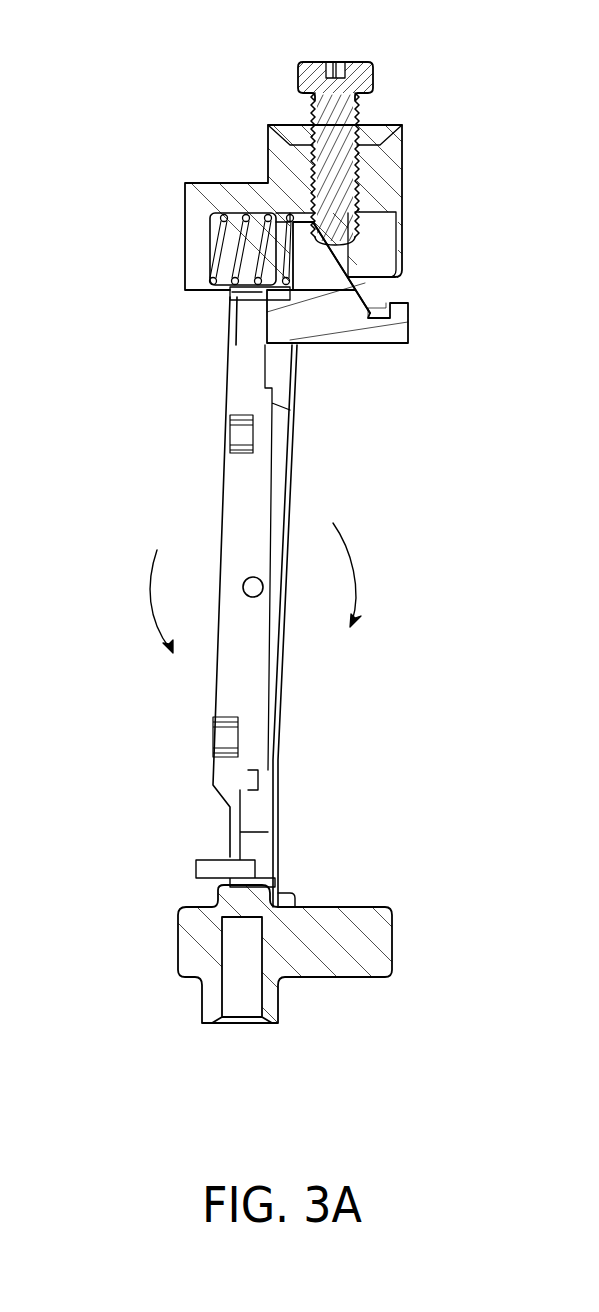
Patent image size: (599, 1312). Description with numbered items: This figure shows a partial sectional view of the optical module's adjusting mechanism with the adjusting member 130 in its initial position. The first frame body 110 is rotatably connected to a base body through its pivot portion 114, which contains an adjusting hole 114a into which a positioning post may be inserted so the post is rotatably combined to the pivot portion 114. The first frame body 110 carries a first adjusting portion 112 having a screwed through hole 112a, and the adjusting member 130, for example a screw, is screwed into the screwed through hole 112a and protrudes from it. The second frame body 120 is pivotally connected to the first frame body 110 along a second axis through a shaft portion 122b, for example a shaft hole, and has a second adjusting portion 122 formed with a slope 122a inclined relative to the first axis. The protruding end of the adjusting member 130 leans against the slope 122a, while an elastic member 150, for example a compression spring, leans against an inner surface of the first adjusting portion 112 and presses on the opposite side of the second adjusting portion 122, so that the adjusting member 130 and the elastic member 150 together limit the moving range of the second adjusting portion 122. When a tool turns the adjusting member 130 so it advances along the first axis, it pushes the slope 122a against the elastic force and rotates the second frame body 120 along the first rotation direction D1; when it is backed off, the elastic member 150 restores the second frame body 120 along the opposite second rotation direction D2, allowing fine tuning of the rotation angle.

The adjusting member 130 is at (313, 77).
The first adjusting portion 112 is at (386, 188).
The screwed through hole 112a is at (355, 167).
The elastic member 150 is at (212, 250).
The second adjusting portion 122 is at (323, 283).
The slope 122a is at (340, 263).
The shaft portion 122b is at (253, 577).
The second frame body 120 is at (252, 847).
The first frame body 110 is at (272, 893).
The pivot portion 114 is at (352, 947).
The adjusting hole 114a is at (222, 957).
The first rotation direction D1 is at (150, 598).
The second rotation direction D2 is at (357, 572).